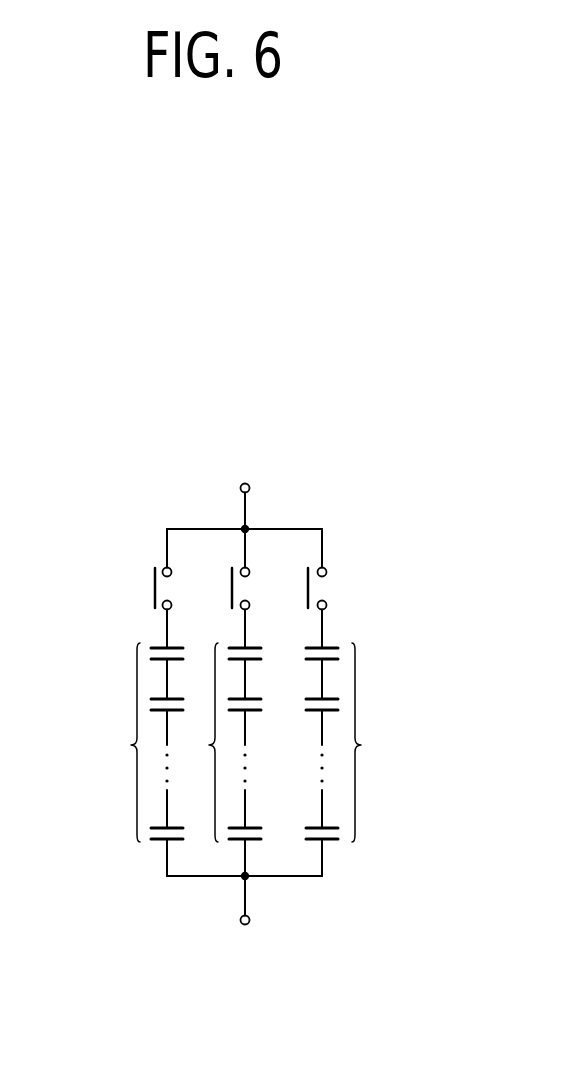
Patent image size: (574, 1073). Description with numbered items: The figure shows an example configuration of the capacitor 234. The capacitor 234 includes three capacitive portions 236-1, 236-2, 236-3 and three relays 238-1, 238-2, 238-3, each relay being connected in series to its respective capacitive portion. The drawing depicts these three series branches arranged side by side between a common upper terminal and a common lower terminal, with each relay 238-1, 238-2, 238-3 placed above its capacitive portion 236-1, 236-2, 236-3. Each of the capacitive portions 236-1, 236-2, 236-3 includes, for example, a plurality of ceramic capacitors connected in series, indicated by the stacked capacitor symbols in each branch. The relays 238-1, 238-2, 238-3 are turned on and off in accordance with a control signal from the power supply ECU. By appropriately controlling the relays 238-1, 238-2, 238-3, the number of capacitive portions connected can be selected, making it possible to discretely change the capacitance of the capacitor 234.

The capacitor 234 is at (349, 468).
The relay 238-1 is at (150, 588).
The relay 238-2 is at (228, 587).
The relay 238-3 is at (328, 588).
The capacitive portion 236-1 is at (122, 759).
The capacitive portion 236-2 is at (200, 747).
The capacitive portion 236-3 is at (368, 759).